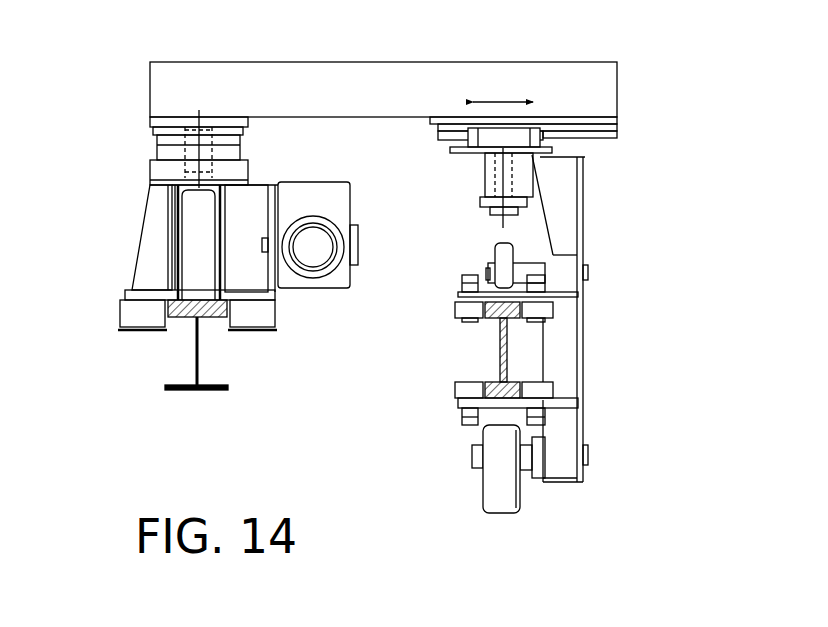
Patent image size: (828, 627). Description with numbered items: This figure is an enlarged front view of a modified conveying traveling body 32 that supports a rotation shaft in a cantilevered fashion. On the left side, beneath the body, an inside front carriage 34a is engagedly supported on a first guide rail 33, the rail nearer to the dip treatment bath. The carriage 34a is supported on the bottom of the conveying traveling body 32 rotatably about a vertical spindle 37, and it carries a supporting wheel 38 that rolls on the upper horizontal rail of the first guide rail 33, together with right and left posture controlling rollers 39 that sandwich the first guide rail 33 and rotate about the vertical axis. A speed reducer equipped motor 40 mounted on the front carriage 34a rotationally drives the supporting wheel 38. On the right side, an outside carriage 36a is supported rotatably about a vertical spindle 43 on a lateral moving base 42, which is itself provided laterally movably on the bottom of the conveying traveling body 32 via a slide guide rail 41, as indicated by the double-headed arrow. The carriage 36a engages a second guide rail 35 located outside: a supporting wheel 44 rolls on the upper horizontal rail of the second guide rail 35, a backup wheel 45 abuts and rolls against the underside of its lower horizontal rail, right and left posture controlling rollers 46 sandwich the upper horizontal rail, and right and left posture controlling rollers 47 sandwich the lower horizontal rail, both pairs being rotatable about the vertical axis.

The conveying traveling body 32 is at (620, 87).
The first guide rail 33 is at (190, 345).
The front carriage 34a is at (143, 220).
The second guide rail 35 is at (497, 345).
The carriage 36a is at (592, 350).
The vertical spindle 37 is at (165, 155).
The supporting wheel 38 is at (190, 248).
The posture controlling rollers 39 is at (130, 313).
The speed reducer equipped motor 40 is at (312, 240).
The slide guide rail 41 is at (598, 140).
The lateral moving base 42 is at (503, 140).
The vertical spindle 43 is at (490, 177).
The supporting wheel 44 is at (482, 258).
The backup wheel 45 is at (497, 470).
The posture controlling rollers 46 is at (462, 313).
The posture controlling rollers 47 is at (462, 392).